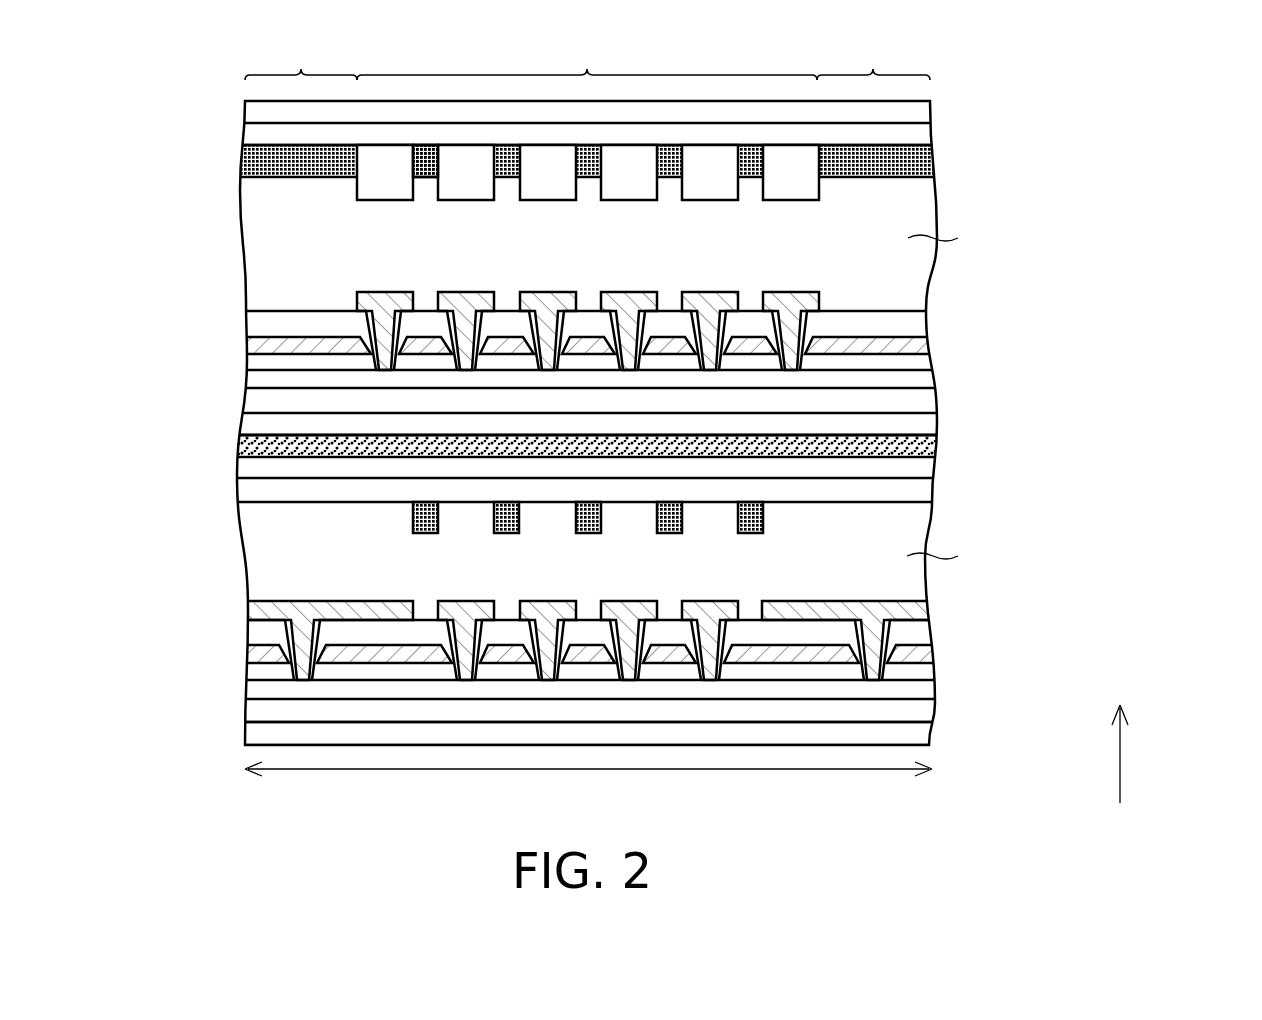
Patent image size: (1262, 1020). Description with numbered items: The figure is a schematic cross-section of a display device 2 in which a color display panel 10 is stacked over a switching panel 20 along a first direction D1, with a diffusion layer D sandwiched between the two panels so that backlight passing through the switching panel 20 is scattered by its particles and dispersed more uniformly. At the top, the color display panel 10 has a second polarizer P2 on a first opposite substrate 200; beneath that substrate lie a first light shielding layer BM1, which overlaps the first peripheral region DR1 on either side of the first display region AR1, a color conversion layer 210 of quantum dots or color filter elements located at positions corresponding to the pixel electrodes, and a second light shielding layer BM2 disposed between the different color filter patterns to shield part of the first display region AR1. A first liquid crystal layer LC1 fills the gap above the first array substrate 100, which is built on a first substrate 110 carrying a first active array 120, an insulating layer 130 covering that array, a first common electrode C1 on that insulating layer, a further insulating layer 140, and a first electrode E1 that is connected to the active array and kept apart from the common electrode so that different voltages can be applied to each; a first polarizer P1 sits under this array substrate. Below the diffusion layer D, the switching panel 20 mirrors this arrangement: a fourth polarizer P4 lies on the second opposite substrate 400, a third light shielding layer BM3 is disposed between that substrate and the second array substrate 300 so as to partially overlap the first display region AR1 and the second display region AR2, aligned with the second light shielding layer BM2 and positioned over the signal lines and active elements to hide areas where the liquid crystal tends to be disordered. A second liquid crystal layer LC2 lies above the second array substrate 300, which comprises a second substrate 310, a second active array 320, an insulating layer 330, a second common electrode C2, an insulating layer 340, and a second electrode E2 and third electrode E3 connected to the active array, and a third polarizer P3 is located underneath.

The display device 2 is at (1252, 847).
The color display panel 10 is at (584, 271).
The switching panel 20 is at (585, 617).
The second polarizer P2 is at (263, 113).
The first opposite substrate 200 is at (262, 133).
The first light shielding layer BM1 is at (263, 160).
The color conversion layer 210 is at (367, 187).
The second light shielding layer BM2 is at (428, 175).
The first liquid crystal layer LC1 is at (954, 237).
The first array substrate 100 is at (512, 364).
The first electrode E1 is at (370, 300).
The insulating layer 140 is at (282, 327).
The first common electrode C1 is at (273, 348).
The insulating layer 130 is at (270, 362).
The first active array 120 is at (272, 380).
The first substrate 110 is at (548, 433).
The first polarizer P1 is at (612, 413).
The diffusion layer D is at (917, 450).
The fourth polarizer P4 is at (917, 468).
The second opposite substrate 400 is at (270, 491).
The third light shielding layer BM3 is at (412, 513).
The second liquid crystal layer LC2 is at (956, 557).
The second array substrate 300 is at (512, 662).
The second electrode E2 is at (463, 608).
The third electrode E3 is at (272, 613).
The insulating layer 340 is at (265, 634).
The second common electrode C2 is at (273, 648).
The insulating layer 330 is at (268, 665).
The second active array 320 is at (262, 690).
The second substrate 310 is at (548, 744).
The third polarizer P3 is at (613, 732).
The first direction D1 is at (1134, 754).
The first peripheral region DR1 is at (587, 55).
The first display region AR1 is at (587, 55).
The second display region AR2 is at (588, 788).